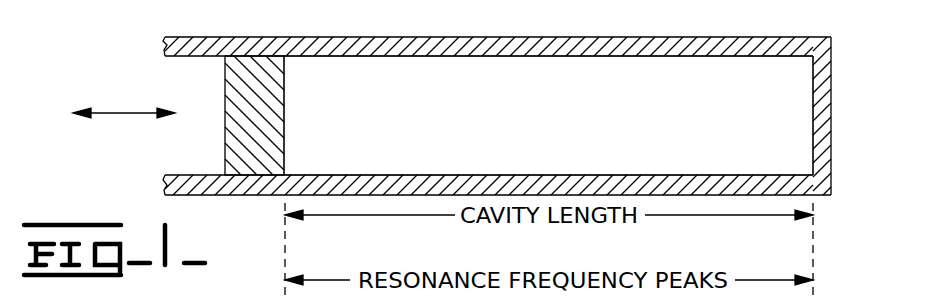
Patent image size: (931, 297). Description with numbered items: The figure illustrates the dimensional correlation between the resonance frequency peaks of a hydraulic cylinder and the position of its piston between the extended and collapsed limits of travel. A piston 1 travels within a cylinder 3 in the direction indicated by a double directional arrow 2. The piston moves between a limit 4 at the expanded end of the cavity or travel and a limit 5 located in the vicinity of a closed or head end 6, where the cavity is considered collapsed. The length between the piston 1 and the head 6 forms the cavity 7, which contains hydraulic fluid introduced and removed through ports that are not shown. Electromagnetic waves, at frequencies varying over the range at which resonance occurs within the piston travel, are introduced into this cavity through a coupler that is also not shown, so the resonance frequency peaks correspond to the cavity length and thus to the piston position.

The piston 1 is at (225, 88).
The double directional arrow 2 is at (127, 115).
The cylinder 3 is at (260, 56).
The limit 4 is at (285, 268).
The limit 5 is at (813, 242).
The head end 6 is at (820, 118).
The cavity 7 is at (673, 72).